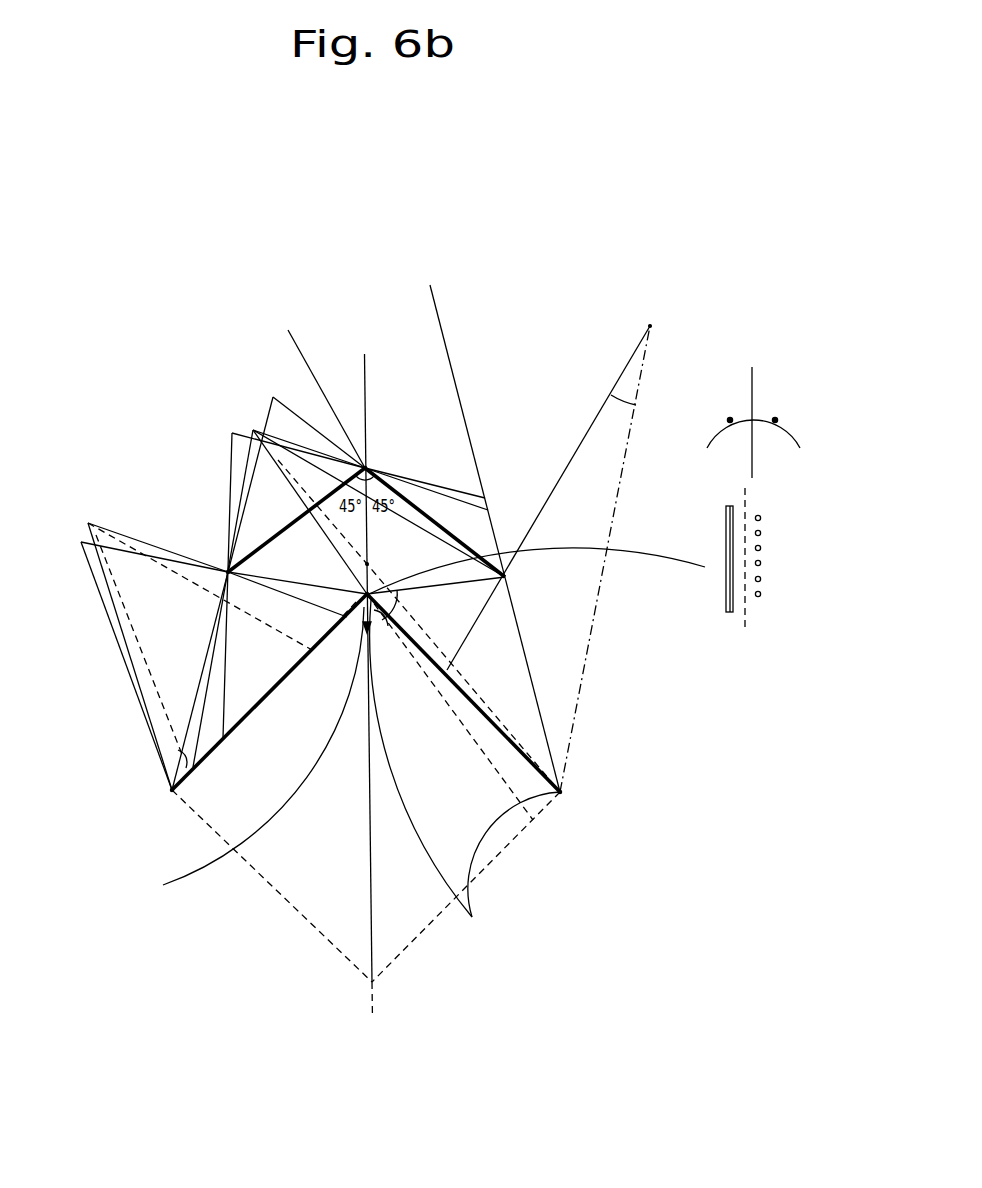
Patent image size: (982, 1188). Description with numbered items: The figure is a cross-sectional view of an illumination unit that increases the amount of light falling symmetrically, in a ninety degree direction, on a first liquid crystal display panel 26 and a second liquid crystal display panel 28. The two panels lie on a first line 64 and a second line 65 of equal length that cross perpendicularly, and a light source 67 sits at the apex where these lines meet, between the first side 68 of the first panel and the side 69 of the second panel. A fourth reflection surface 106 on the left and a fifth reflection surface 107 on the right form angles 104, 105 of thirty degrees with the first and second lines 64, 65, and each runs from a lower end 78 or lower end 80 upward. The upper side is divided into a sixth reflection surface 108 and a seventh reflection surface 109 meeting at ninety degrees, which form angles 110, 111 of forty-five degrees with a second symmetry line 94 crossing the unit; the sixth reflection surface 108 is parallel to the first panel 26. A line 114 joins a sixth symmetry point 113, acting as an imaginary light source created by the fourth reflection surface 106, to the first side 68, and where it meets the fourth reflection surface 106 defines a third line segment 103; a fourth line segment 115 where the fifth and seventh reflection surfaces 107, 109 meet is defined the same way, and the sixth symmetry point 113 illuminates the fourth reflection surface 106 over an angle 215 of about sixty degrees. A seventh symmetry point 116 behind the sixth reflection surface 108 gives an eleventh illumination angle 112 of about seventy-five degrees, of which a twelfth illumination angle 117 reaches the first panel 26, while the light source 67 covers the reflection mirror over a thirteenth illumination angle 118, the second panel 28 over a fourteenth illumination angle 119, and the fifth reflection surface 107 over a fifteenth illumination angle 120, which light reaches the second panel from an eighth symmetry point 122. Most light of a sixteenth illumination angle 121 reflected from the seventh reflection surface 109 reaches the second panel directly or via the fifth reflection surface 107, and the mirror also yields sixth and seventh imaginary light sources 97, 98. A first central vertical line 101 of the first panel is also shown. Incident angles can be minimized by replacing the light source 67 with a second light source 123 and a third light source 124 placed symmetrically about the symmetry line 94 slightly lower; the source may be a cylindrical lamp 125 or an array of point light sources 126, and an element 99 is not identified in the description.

The first liquid crystal display panel 26 is at (269, 692).
The second liquid crystal display panel 28 is at (485, 718).
The first line 64 is at (252, 754).
The second line 65 is at (465, 772).
The light source 67 is at (517, 572).
The first side of the first liquid crystal display panel 68 is at (343, 632).
The side of the second liquid crystal display panel 69 is at (450, 707).
The lower end of the first reflection surface 78 is at (263, 885).
The lower end of the second reflection surface 80 is at (473, 886).
The second symmetry line 94 is at (372, 867).
The sixth imaginary light source 97 is at (400, 599).
The seventh imaginary light source 98 is at (368, 565).
The lens 99 is at (794, 438).
The first central vertical line 101 is at (200, 597).
The third line segment 103 is at (227, 571).
The angle 104 is at (172, 755).
The angle 105 is at (535, 762).
The fourth reflection surface 106 is at (200, 680).
The fifth reflection surface 107 is at (534, 685).
The sixth reflection surface 108 is at (272, 538).
The seventh reflection surface 109 is at (436, 520).
The angle 110 is at (377, 470).
The angle 111 is at (390, 482).
The eleventh illumination angle 112 is at (292, 452).
The sixth symmetry point 113 is at (145, 644).
The line 114 is at (105, 540).
The fourth line segment 115 is at (517, 596).
The seventh symmetry point 116 is at (287, 572).
The twelfth illumination angle 117 is at (280, 468).
The thirteenth illumination angle 118 is at (296, 520).
The fourteenth illumination angle 119 is at (295, 482).
The fifteenth illumination angle 120 is at (308, 448).
The sixteenth illumination angle 121 is at (313, 447).
The eighth symmetry point 122 is at (557, 547).
The second light source 123 is at (726, 407).
The third light source 124 is at (784, 407).
The cylindrical lamp 125 is at (727, 540).
The array of point light sources 126 is at (760, 562).
The angle 215 is at (105, 572).